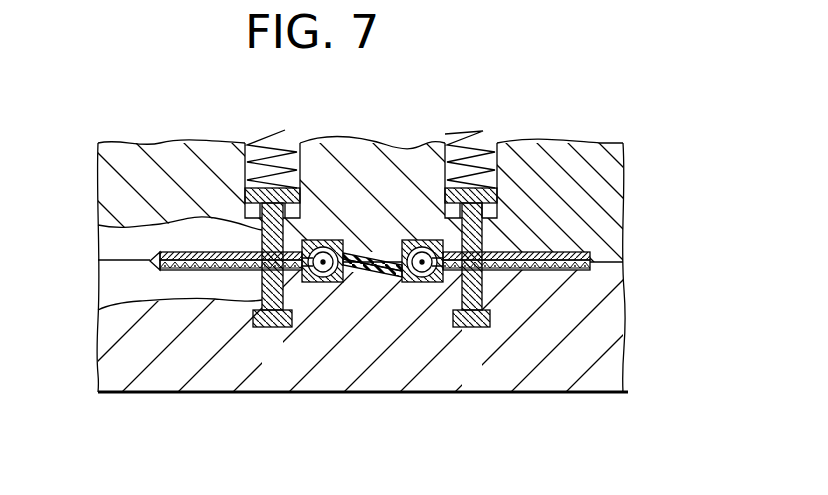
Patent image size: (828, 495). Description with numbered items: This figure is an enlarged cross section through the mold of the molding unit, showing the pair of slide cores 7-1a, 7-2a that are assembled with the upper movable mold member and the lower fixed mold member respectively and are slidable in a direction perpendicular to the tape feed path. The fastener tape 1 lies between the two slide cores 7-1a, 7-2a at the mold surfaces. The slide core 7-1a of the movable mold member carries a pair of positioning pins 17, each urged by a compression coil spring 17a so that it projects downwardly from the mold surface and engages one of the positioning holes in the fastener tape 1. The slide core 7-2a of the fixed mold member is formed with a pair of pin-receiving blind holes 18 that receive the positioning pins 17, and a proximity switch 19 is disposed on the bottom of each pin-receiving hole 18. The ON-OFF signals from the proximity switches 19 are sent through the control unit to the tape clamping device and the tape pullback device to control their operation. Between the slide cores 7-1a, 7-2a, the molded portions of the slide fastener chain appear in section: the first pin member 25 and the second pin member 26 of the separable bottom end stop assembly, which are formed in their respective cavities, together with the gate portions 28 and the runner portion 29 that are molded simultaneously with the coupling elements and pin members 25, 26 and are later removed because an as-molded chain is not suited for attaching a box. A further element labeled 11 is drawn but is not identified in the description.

The slide core of the movable mold member 7-1a is at (143, 165).
The slide core of the fixed mold member 7-2a is at (160, 394).
The positioning pin 17 is at (98, 225).
The compression coil spring 17a is at (285, 130).
The pin-receiving blind hole 18 is at (98, 310).
The proximity switch 19 is at (265, 328).
The fastener tape 1 is at (583, 271).
The upper layer of plate 11 is at (550, 272).
The first pin member 25 is at (420, 283).
The second pin member 26 is at (320, 284).
The gate portion 28 is at (355, 247).
The runner portion 29 is at (372, 273).